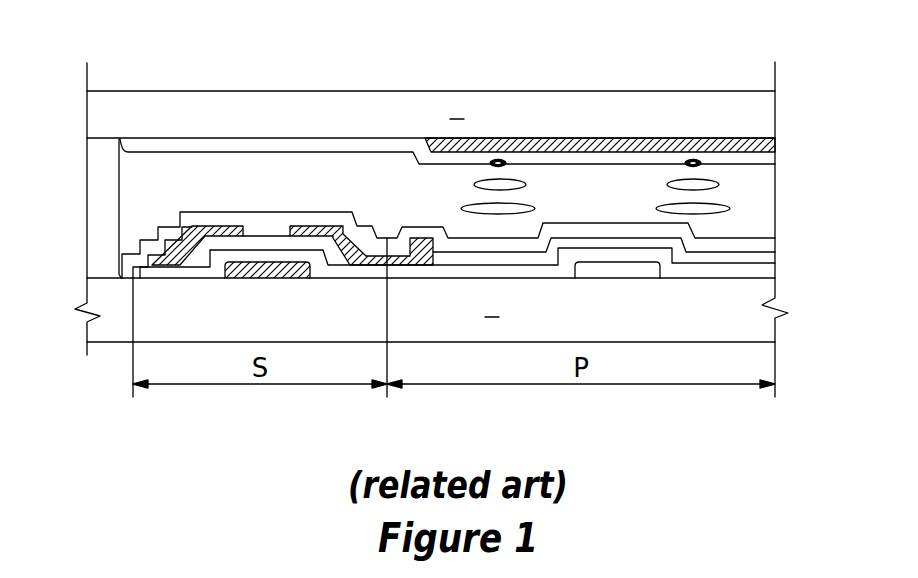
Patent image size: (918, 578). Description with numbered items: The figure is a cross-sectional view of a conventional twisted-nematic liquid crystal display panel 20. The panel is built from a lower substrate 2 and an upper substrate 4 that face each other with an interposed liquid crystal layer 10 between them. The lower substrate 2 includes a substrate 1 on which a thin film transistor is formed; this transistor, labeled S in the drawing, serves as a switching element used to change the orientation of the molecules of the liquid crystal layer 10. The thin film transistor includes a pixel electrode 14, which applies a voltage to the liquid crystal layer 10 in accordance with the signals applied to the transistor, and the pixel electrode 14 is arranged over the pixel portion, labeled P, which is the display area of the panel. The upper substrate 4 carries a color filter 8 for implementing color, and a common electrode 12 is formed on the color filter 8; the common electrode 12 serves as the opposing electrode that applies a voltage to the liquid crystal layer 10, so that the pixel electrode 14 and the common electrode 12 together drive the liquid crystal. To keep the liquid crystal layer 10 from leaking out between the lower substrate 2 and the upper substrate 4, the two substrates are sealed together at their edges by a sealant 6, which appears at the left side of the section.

The TN-LCD panel 20 is at (262, 80).
The upper substrate 4 is at (460, 203).
The substrate 1 is at (474, 206).
The color filter 8 is at (638, 138).
The common electrode 12 is at (748, 150).
The sealant 6 is at (93, 207).
The liquid crystal layer 10 is at (790, 163).
The pixel electrode 14 is at (767, 256).
The lower substrate 2 is at (790, 238).